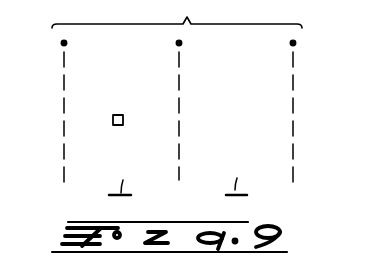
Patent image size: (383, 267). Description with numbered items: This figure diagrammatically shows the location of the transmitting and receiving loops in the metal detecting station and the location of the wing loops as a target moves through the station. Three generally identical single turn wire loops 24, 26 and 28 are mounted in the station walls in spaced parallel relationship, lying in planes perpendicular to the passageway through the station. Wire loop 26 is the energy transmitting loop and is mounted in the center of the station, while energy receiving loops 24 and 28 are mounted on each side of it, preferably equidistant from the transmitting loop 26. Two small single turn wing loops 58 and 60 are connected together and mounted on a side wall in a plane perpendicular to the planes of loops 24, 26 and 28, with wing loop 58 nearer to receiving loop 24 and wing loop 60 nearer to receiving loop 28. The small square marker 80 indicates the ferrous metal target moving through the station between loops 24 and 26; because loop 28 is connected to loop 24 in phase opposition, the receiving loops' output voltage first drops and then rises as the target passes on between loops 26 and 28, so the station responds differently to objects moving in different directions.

The energy receiving loop 24 is at (64, 160).
The energy transmitting loop 26 is at (179, 137).
The energy receiving loop 28 is at (293, 104).
The wing loop 58 is at (123, 176).
The wing loop 60 is at (233, 174).
The square marker 80 is at (132, 116).